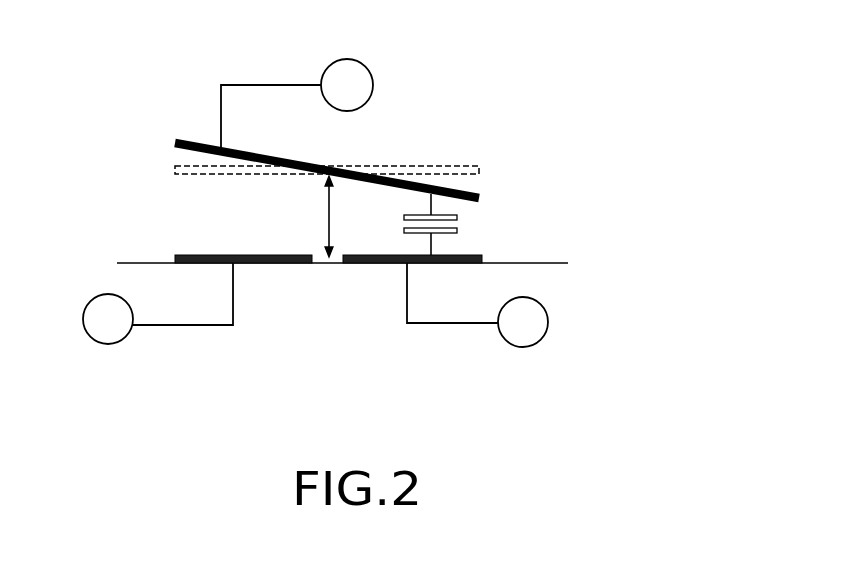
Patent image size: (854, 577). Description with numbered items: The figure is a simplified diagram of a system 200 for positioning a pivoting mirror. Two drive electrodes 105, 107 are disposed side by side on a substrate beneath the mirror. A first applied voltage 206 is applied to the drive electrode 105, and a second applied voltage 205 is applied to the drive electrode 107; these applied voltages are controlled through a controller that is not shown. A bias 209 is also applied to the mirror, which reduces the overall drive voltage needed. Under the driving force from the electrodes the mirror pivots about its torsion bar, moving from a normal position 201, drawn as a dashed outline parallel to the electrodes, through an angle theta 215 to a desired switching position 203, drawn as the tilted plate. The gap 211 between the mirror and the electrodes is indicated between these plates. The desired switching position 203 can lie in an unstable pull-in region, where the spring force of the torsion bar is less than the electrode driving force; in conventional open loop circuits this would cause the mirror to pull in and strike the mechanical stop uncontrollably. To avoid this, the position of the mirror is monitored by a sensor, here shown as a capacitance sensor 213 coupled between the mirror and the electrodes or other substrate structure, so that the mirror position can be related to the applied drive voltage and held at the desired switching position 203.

The system 200 is at (618, 72).
The normal position 201 is at (435, 167).
The desired switching position 203 is at (480, 201).
The second applied voltage 205 is at (100, 345).
The first applied voltage 206 is at (547, 335).
The bias 209 is at (364, 65).
The gap g 211 is at (327, 216).
The capacitance sensor 213 is at (457, 231).
The angle theta 215 is at (497, 184).
The drive electrode 105 is at (370, 263).
The drive electrode 107 is at (268, 265).